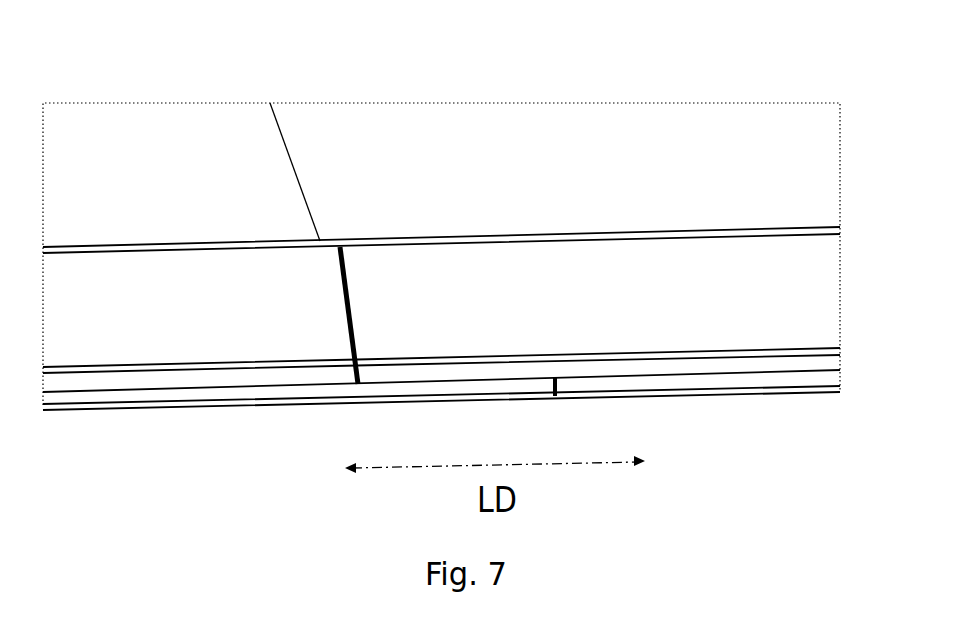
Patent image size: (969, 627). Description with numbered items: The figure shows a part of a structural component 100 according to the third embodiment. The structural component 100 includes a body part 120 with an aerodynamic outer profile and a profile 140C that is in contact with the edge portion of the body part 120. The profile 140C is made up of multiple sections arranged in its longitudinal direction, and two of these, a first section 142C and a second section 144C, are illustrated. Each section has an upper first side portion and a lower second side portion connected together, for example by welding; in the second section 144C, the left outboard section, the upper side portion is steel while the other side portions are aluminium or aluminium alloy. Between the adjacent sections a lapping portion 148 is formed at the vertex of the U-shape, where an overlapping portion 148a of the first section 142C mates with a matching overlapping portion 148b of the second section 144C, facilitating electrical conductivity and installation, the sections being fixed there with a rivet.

The structural component 100 is at (538, 92).
The body part 120 is at (520, 186).
The profile 140C is at (292, 418).
The first section 142C is at (645, 316).
The second section 144C is at (305, 316).
The lapping portion 148 is at (441, 356).
The overlapping portion 148a is at (432, 377).
The overlapping portion 148b is at (522, 387).